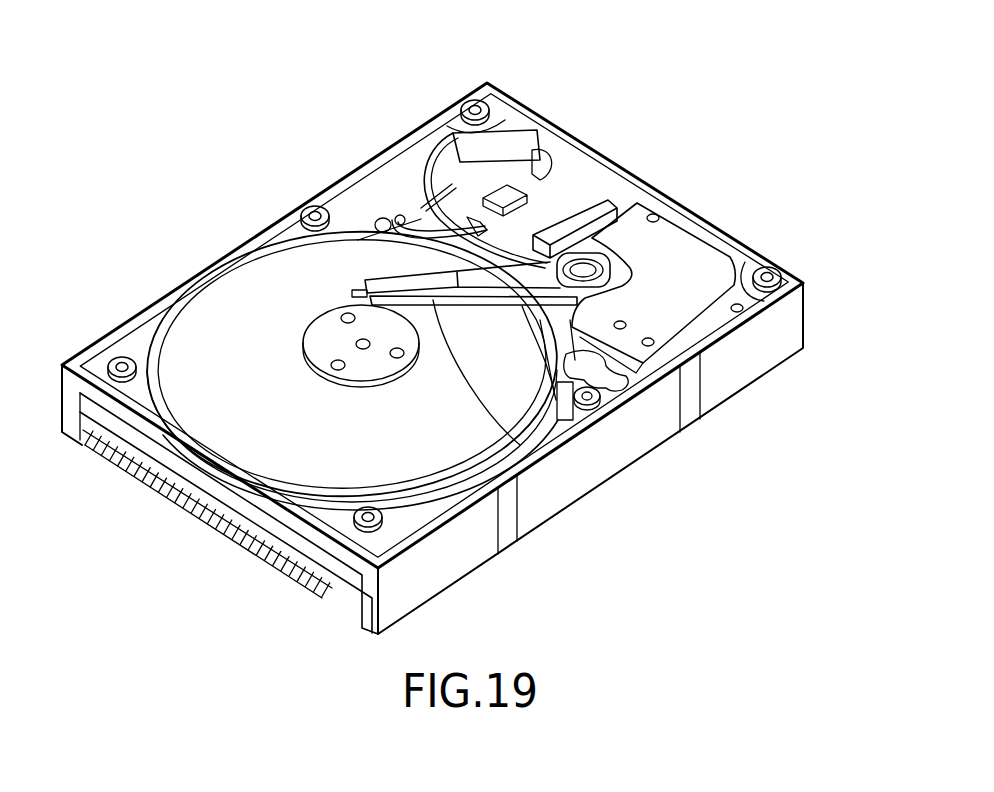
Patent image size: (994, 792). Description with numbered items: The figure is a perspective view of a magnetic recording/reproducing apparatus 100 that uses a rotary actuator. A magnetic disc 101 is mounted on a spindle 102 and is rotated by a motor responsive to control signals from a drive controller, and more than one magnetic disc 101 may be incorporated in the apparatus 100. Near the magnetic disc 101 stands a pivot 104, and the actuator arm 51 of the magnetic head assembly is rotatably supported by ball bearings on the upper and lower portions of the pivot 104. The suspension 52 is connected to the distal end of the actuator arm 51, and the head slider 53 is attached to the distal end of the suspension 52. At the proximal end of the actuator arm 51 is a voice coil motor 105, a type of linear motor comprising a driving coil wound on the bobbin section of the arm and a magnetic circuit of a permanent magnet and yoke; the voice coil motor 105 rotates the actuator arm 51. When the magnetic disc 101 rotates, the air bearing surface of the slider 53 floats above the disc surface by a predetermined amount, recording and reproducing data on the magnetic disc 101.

The magnetic recording/reproducing apparatus 100 is at (545, 58).
The magnetic disc 101 is at (233, 283).
The spindle 102 is at (313, 357).
The pivot 104 is at (582, 262).
The voice coil motor 105 is at (702, 260).
The actuator arm 51 is at (588, 405).
The suspension 52 is at (493, 283).
The head slider 53 is at (357, 290).